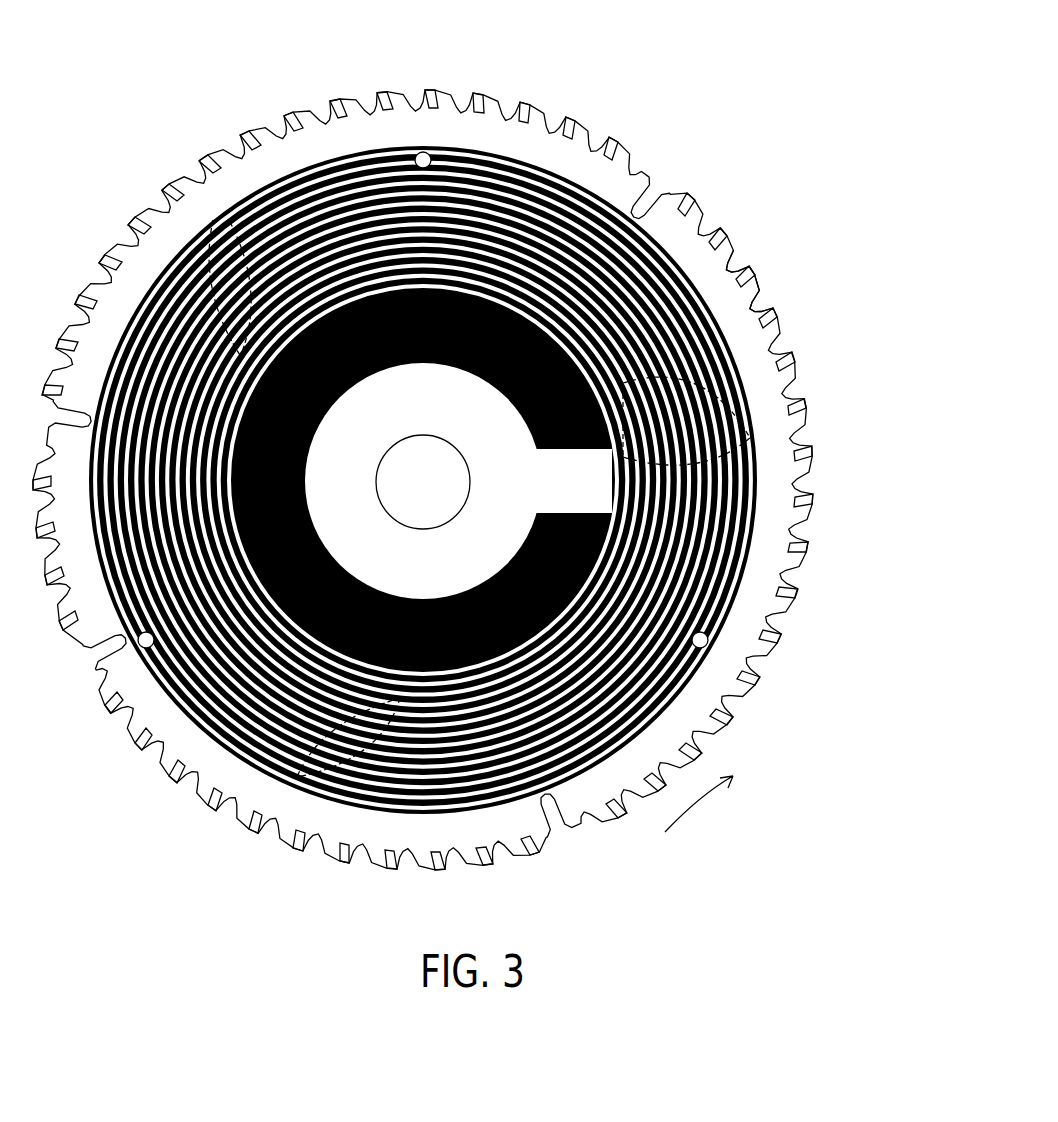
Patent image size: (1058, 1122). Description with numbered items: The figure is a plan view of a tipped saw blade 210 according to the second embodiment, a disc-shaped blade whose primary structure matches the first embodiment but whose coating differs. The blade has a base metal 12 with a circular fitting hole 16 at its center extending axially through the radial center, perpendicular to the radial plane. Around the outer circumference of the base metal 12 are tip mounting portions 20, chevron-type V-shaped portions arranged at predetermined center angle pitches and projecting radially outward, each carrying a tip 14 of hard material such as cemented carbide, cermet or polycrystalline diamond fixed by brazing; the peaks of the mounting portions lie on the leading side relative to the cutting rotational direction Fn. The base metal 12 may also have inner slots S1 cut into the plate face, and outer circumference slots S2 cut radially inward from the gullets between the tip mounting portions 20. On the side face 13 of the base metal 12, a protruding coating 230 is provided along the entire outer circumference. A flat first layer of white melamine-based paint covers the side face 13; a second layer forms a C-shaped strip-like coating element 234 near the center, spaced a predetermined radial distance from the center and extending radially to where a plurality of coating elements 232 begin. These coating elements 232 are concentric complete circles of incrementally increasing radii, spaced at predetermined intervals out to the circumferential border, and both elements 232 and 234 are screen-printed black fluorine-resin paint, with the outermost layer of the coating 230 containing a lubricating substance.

The tipped saw blade 210 is at (439, 471).
The tip 14 is at (712, 216).
The tip mounting portion 20 is at (772, 310).
The fitting hole 16 is at (448, 448).
The base metal 12 is at (706, 466).
The side face 13 is at (598, 470).
The protruding coating 230 is at (515, 480).
The coating element 232 is at (747, 568).
The coating element 234 is at (603, 577).
The inner slot S1 is at (220, 224).
The outer circumference slot S2 is at (425, 152).
The cutting rotational direction Fn is at (699, 809).